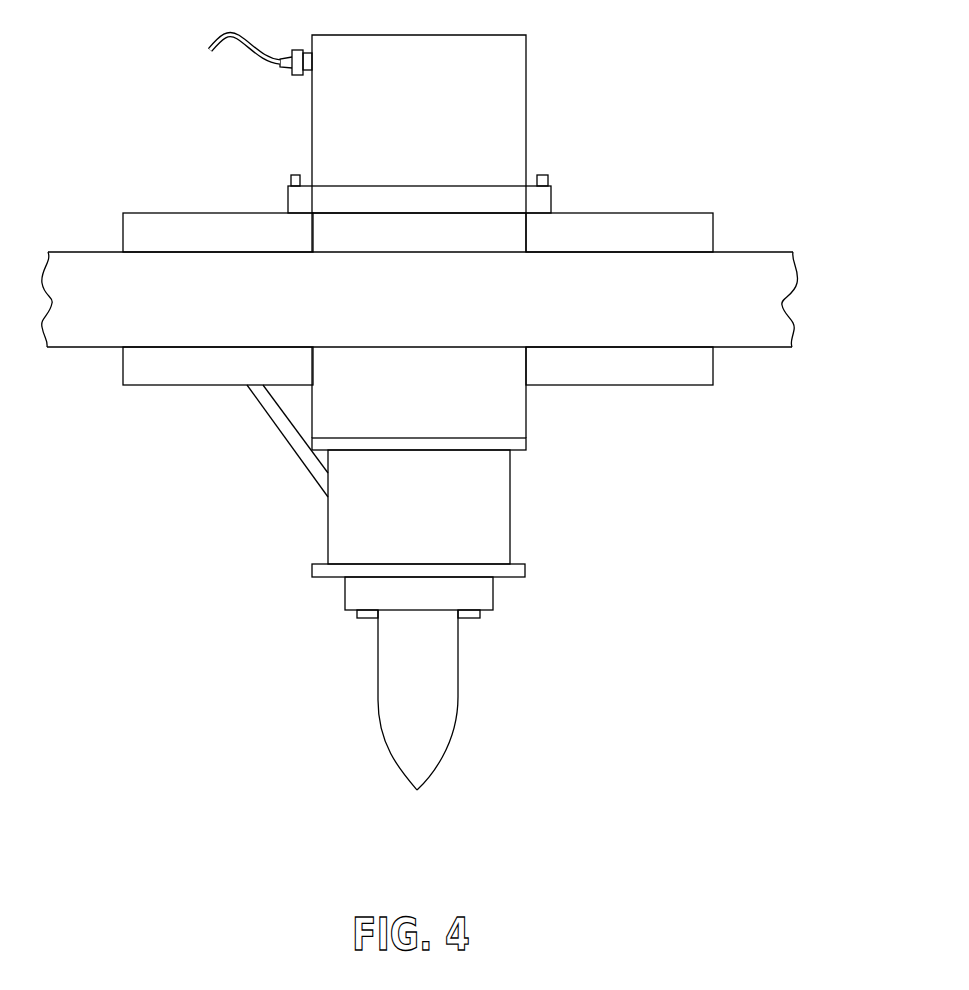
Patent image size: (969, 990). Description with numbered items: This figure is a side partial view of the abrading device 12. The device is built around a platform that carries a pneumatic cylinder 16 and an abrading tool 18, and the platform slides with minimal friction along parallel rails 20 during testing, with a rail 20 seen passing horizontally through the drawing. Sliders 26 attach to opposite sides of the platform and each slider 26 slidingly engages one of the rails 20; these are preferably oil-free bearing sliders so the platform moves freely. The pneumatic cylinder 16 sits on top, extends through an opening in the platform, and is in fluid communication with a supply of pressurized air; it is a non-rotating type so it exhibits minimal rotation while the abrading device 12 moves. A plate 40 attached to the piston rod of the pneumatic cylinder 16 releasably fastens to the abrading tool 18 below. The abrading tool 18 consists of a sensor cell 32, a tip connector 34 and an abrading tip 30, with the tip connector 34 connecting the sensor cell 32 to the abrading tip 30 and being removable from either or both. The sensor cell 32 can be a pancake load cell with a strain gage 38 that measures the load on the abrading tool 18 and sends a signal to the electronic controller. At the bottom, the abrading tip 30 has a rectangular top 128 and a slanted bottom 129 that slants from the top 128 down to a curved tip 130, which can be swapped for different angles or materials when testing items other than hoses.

The abrading device 12 is at (407, 142).
The pneumatic cylinder 16 is at (512, 75).
The slider 26 is at (618, 218).
The rail 20 is at (670, 304).
The plate 40 is at (503, 412).
The sensor cell 32 is at (493, 513).
The strain gage 38 is at (355, 500).
The abrading tool 18 is at (523, 573).
The tip connector 34 is at (362, 593).
The abrading tip 30 is at (426, 722).
The rectangular top 128 is at (448, 637).
The slanted bottom 129 is at (398, 728).
The curved tip 130 is at (417, 790).